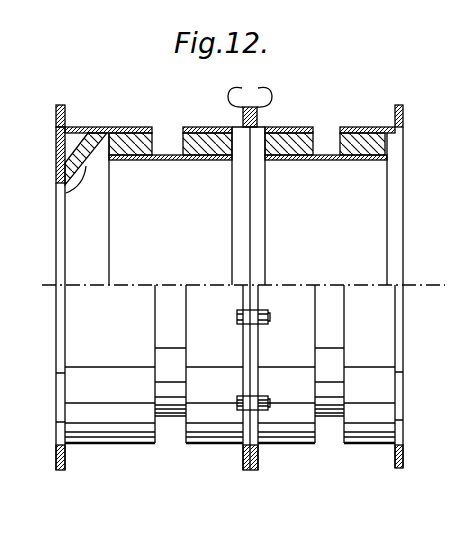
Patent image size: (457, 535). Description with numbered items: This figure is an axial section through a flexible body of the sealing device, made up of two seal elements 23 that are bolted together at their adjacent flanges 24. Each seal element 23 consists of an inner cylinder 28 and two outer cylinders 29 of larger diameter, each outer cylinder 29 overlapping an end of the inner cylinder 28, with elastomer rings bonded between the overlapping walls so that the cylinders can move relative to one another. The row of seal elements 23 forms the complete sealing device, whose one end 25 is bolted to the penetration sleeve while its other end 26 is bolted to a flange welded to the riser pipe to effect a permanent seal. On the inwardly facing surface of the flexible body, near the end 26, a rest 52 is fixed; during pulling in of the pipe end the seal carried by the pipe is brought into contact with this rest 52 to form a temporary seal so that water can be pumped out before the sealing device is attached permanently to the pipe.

The seal element 23 is at (164, 130).
The flange 24 is at (61, 106).
The end of the sealing device 25 is at (409, 122).
The other end of the sealing device 26 is at (45, 125).
The inner cylinder 28 is at (132, 161).
The outer cylinder 29 is at (127, 127).
The rest 52 is at (66, 197).